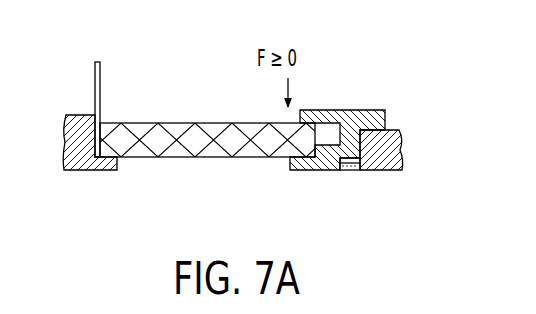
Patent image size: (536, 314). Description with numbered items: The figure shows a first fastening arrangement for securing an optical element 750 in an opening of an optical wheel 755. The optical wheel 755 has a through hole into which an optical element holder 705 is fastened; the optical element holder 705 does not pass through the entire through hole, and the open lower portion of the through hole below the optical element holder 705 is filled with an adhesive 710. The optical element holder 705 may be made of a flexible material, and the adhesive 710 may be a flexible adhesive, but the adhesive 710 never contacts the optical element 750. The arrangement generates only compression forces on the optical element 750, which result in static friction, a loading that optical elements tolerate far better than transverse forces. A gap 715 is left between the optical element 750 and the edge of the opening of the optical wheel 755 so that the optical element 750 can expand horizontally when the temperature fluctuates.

The optical element holder 705 is at (337, 108).
The adhesive 710 is at (352, 164).
The gap 715 is at (135, 73).
The optical element 750 is at (182, 151).
The optical wheel 755 is at (385, 152).